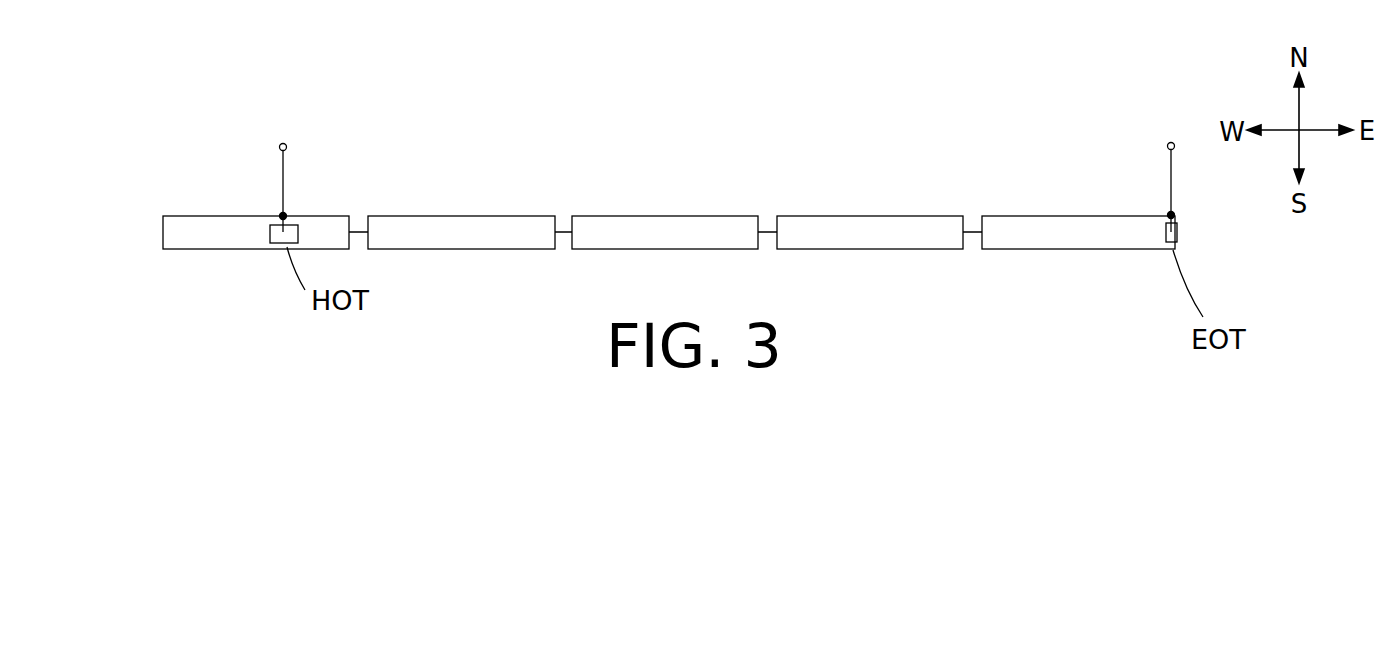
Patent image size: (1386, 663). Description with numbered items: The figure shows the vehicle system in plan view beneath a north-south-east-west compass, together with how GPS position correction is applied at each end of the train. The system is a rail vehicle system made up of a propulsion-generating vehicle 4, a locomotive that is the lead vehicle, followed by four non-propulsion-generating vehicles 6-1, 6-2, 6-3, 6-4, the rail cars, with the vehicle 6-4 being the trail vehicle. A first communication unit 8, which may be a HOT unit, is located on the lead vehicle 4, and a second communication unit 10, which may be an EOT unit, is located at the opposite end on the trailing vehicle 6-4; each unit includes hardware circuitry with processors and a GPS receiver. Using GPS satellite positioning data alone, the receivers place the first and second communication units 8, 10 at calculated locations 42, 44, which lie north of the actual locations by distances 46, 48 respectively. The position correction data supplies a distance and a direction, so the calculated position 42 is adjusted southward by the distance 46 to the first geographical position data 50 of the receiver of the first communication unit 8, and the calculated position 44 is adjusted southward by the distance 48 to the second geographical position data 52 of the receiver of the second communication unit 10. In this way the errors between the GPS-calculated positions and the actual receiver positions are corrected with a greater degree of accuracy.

The propulsion-generating vehicle 4 is at (188, 235).
The non-propulsion-generating vehicle 6-1 is at (436, 216).
The non-propulsion-generating vehicle 6-2 is at (655, 215).
The non-propulsion-generating vehicle 6-3 is at (888, 215).
The non-propulsion-generating vehicle 6-4 is at (1023, 214).
The first communication unit 8 is at (297, 234).
The second communication unit 10 is at (1178, 228).
The calculated geographical position data 42 is at (283, 143).
The calculated geographical position data 44 is at (1171, 142).
The distance 46 is at (282, 182).
The distance 48 is at (1170, 178).
The first geographical position data 50 is at (271, 240).
The second geographical position data 52 is at (1167, 233).